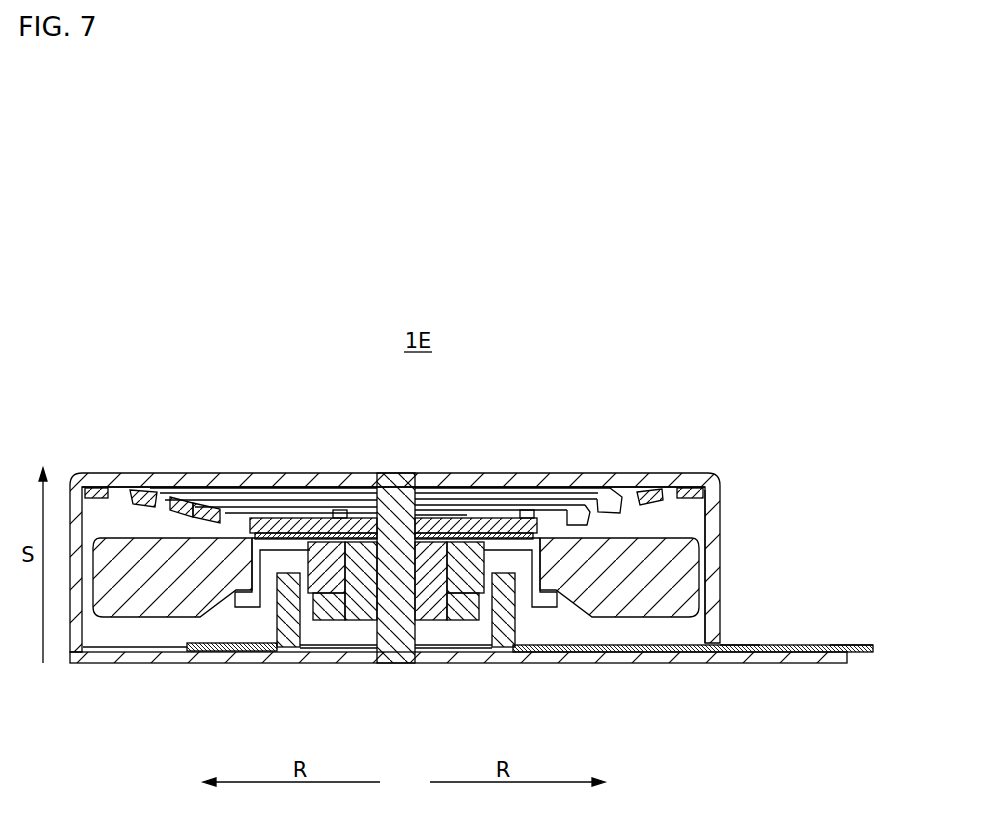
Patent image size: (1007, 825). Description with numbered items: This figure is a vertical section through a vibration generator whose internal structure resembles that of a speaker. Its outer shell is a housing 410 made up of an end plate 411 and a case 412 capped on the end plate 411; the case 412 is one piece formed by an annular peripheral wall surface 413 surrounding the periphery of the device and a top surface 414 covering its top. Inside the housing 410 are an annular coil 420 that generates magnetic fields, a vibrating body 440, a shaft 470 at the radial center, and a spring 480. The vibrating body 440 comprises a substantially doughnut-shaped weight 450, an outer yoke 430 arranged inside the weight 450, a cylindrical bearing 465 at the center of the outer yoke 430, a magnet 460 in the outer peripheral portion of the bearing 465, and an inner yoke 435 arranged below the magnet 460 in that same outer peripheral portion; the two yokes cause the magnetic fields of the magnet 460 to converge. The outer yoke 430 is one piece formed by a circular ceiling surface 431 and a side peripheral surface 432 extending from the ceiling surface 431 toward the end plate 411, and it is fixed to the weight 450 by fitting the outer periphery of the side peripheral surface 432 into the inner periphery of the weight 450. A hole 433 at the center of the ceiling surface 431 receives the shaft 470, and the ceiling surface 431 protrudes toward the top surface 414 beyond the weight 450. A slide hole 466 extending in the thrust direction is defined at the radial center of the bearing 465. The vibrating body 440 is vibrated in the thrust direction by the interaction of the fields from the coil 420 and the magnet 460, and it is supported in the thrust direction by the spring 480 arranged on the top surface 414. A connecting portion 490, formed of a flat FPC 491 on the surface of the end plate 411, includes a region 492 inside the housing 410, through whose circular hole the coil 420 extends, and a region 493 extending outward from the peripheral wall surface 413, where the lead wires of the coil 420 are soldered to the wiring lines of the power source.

The housing 410 is at (573, 472).
The end plate 411 is at (116, 664).
The case 412 is at (630, 472).
The peripheral wall surface 413 is at (720, 512).
The top surface 414 is at (481, 473).
The coil 420 is at (506, 646).
The outer yoke 430 is at (550, 608).
The ceiling surface 431 is at (273, 511).
The side peripheral surface 432 is at (252, 570).
The hole 433 is at (355, 506).
The inner yoke 435 is at (458, 621).
The vibrating body 440 is at (170, 621).
The weight 450 is at (628, 619).
The magnet 460 is at (310, 644).
The bearing 465 is at (353, 622).
The slide hole 466 is at (388, 582).
The shaft 470 is at (400, 473).
The spring 480 is at (480, 514).
The connecting portion 490 is at (783, 645).
The FPC 491 is at (742, 644).
The region 492 is at (670, 660).
The region 493 is at (820, 644).